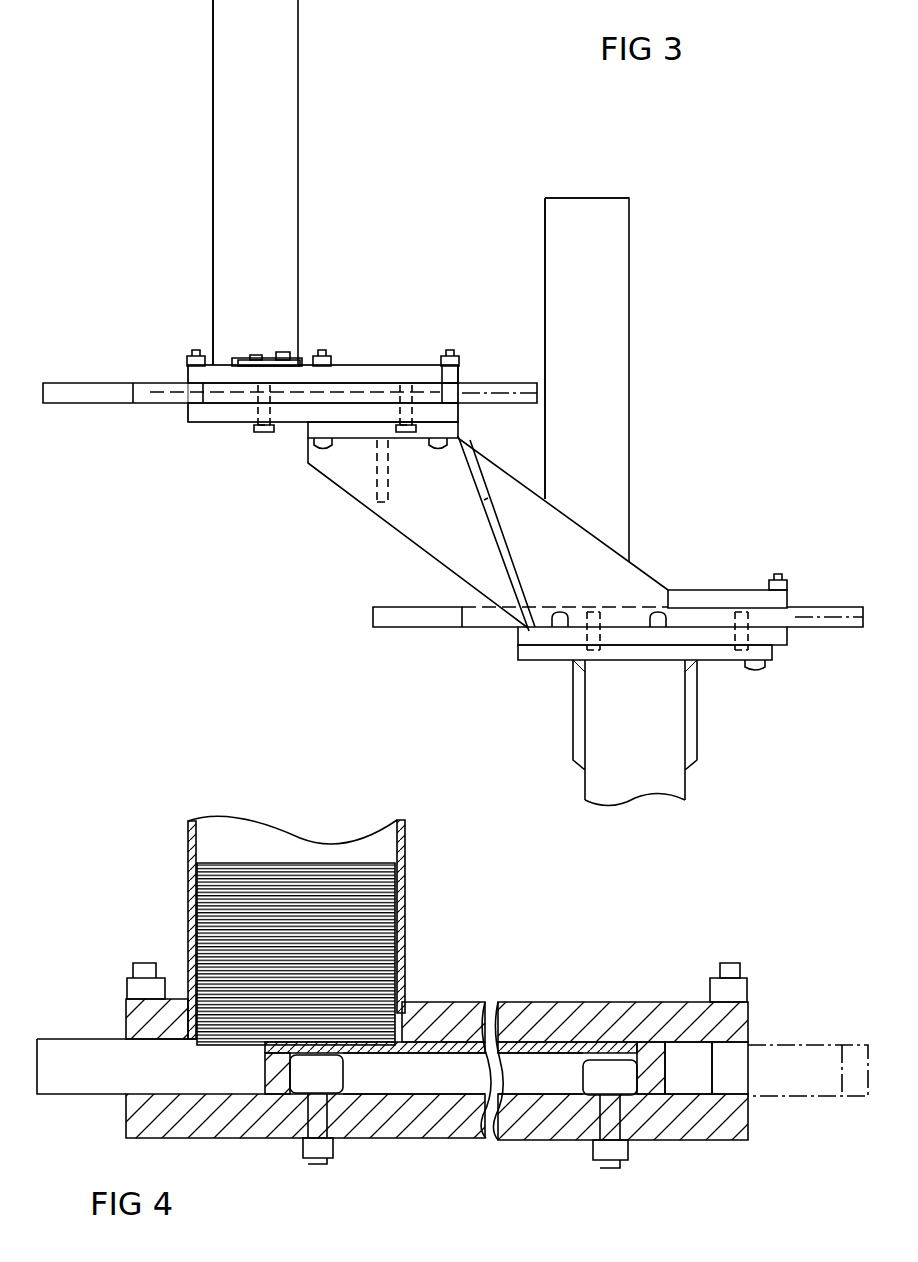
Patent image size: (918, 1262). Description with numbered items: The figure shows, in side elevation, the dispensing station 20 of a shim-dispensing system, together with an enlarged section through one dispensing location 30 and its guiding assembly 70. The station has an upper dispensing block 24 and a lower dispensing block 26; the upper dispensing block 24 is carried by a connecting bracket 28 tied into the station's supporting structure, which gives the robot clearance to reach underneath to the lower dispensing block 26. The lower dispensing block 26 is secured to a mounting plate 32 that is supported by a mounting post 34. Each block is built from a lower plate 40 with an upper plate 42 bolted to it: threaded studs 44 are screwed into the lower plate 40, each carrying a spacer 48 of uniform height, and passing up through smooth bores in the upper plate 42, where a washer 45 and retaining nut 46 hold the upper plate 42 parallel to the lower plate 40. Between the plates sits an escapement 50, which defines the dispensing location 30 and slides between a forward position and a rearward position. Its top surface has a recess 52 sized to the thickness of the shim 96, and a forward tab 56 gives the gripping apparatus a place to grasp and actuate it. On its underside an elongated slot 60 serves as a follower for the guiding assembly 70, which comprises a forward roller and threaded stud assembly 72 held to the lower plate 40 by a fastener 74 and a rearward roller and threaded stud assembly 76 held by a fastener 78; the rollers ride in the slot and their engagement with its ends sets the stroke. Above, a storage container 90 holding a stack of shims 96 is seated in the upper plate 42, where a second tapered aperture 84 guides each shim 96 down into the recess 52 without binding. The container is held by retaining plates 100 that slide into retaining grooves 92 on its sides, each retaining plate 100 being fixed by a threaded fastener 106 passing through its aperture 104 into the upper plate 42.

In FIG. 3, the dispensing station 20 is at (683, 195).
In FIG. 4, the dispensing station 20 is at (165, 825).
In FIG. 3, the upper dispensing block 24 is at (163, 176).
In FIG. 3, the lower dispensing block 26 is at (688, 488).
In FIG. 3, the connecting bracket 28 is at (618, 570).
In FIG. 3, the dispensing location 30 is at (118, 432).
In FIG. 3, the mounting plate 32 is at (720, 655).
In FIG. 3, the mounting post 34 is at (678, 780).
In FIG. 3, the lower plate 40 is at (208, 416).
In FIG. 4, the lower plate 40 is at (135, 1120).
In FIG. 3, the upper plate 42 is at (372, 383).
In FIG. 4, the upper plate 42 is at (565, 1015).
In FIG. 3, the threaded stud 44 is at (195, 352).
In FIG. 4, the threaded stud 44 is at (728, 964).
In FIG. 4, the washer 45 is at (748, 1002).
In FIG. 3, the retaining nut 46 is at (458, 372).
In FIG. 4, the retaining nut 46 is at (710, 988).
In FIG. 3, the spacer 48 is at (448, 393).
In FIG. 4, the spacer 48 is at (745, 1075).
In FIG. 3, the escapement 50 is at (80, 388).
In FIG. 4, the escapement 50 is at (528, 1048).
In FIG. 4, the recess 52 is at (240, 1048).
In FIG. 4, the forward tab 56 is at (118, 1050).
In FIG. 4, the elongated slot 60 is at (440, 1110).
In FIG. 4, the guiding assembly 70 is at (358, 1085).
In FIG. 4, the forward roller and threaded stud assembly 72 is at (300, 1082).
In FIG. 4, the fastener 74 is at (315, 1150).
In FIG. 4, the rearward roller and threaded stud assembly 76 is at (635, 1090).
In FIG. 4, the fastener 78 is at (612, 1162).
In FIG. 4, the second tapered aperture 84 is at (404, 1014).
In FIG. 3, the storage container 90 is at (290, 74).
In FIG. 4, the storage container 90 is at (405, 836).
In FIG. 3, the retaining groove 92 is at (240, 360).
In FIG. 4, the shim 96 is at (275, 860).
In FIG. 3, the retaining plate 100 is at (290, 366).
In FIG. 3, the aperture 104 is at (294, 358).
In FIG. 3, the threaded fastener 106 is at (284, 352).